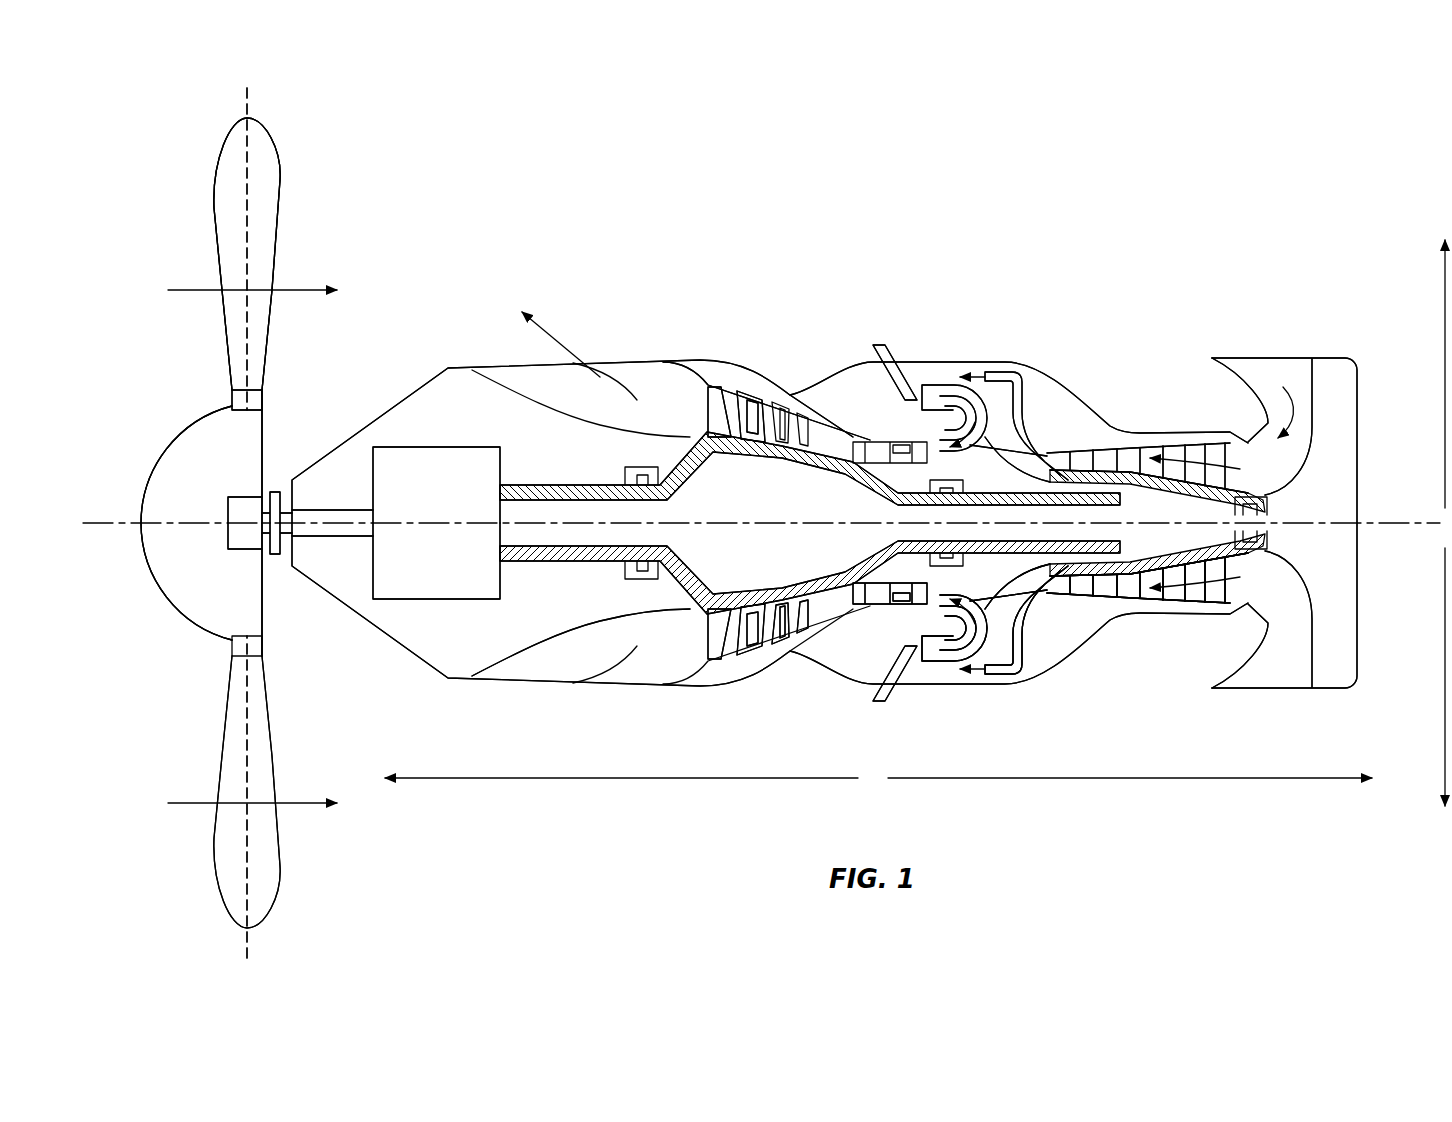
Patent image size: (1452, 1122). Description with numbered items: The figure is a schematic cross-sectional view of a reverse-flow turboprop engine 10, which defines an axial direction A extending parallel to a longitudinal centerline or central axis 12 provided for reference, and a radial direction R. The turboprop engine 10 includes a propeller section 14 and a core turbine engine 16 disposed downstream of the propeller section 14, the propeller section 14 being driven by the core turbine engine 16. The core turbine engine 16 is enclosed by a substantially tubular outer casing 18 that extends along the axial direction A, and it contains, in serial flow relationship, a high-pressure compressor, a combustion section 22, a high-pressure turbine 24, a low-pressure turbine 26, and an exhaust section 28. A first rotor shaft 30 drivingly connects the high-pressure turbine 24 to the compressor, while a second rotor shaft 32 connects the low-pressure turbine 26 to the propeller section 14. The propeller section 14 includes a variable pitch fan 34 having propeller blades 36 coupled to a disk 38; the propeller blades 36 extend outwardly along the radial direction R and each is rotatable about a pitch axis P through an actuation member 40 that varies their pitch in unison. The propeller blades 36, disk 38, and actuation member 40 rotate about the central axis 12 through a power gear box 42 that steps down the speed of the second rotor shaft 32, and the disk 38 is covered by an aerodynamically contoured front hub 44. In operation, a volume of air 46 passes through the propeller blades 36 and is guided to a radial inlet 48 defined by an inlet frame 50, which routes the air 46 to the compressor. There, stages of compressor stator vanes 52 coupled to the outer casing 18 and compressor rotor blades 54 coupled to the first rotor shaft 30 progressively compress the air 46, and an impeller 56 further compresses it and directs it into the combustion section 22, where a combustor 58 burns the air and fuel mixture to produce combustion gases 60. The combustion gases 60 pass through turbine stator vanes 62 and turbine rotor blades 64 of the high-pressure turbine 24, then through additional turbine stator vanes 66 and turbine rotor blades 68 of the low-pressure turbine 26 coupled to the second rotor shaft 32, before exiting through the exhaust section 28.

The reverse-flow turboprop engine 10 is at (453, 300).
The longitudinal centerline or central axis 12 is at (1380, 525).
The propeller section 14 is at (276, 270).
The core turbine engine 16 is at (727, 303).
The outer casing 18 is at (947, 362).
The combustion section 22 is at (937, 677).
The high-pressure turbine 24 is at (877, 627).
The low-pressure turbine 26 is at (742, 663).
The exhaust section 28 is at (623, 662).
The first rotor shaft 30 is at (1097, 457).
The second rotor shaft 32 is at (690, 440).
The variable pitch fan 34 is at (187, 622).
The propeller blades 36 is at (213, 203).
The disk 38 is at (262, 400).
The actuation member 40 is at (233, 497).
The power gear box 42 is at (420, 447).
The front hub 44 is at (160, 598).
The volume of air 46 is at (302, 291).
The radial inlet 48 is at (1267, 355).
The inlet frame 50 is at (1320, 355).
The compressor stator vanes 52 is at (1197, 597).
The compressor rotor blades 54 is at (1173, 600).
The impeller 56 is at (1033, 593).
The combustor 58 is at (935, 388).
The combustion gases 60 is at (1000, 395).
The turbine stator vanes 62 is at (853, 437).
The turbine rotor blades 64 is at (832, 402).
The turbine stator vanes 66 is at (734, 392).
The turbine rotor blades 68 is at (705, 392).
The pitch axis P is at (248, 158).
The axial direction A is at (878, 778).
The radial direction R is at (1443, 523).